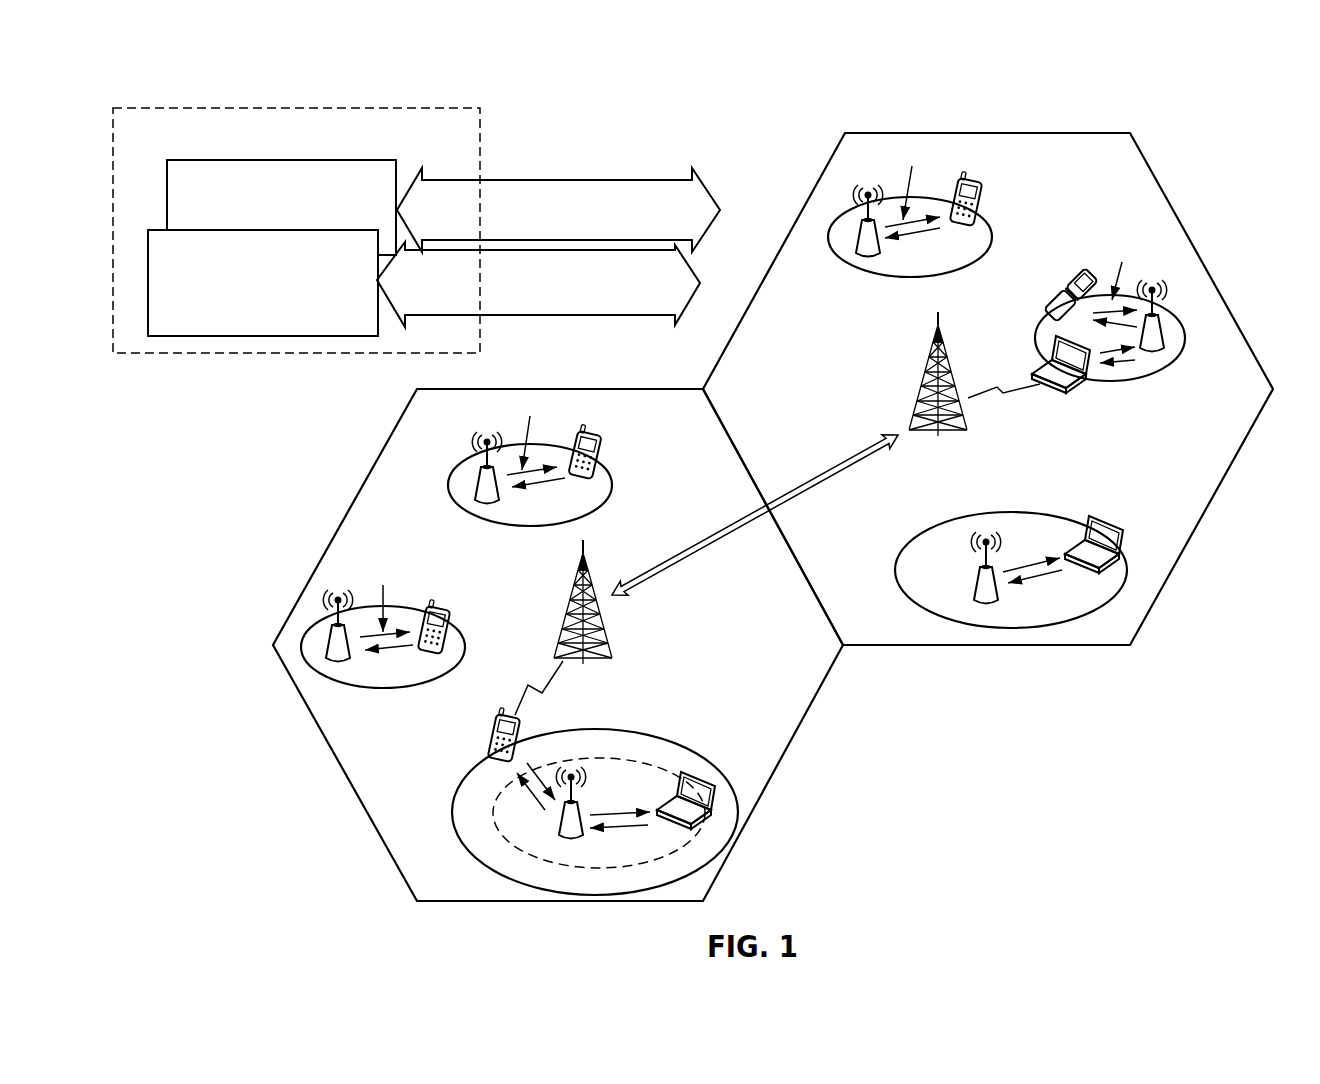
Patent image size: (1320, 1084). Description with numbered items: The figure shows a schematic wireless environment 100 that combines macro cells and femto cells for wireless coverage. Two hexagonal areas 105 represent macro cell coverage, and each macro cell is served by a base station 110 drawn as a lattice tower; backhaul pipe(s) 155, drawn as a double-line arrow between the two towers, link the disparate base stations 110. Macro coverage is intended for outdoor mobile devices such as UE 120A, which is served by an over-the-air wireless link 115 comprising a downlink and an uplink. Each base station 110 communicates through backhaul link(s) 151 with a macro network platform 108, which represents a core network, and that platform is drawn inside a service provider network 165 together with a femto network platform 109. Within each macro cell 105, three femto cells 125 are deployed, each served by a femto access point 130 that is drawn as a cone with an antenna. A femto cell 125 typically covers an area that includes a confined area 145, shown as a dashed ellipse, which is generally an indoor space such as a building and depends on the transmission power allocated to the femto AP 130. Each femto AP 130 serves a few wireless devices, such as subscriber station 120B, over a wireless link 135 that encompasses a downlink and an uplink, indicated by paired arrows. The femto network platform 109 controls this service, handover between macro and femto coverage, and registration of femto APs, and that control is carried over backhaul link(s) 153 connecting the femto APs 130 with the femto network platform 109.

The wireless environment 100 is at (1231, 124).
The macro cell coverage area 105 is at (360, 488).
The macro network platform 108 is at (167, 192).
The femto network platform 109 is at (244, 324).
The base station 110 is at (574, 576).
The wireless link 115 is at (537, 676).
The UE 120A is at (492, 720).
The subscriber station 120B is at (590, 435).
The femto cell 125 is at (467, 518).
The femto access point 130 is at (479, 464).
The wireless link 135 is at (530, 416).
The confined area 145 is at (610, 759).
The backhaul link(s) 151 is at (655, 178).
The backhaul link(s) 153 is at (628, 317).
The backhaul pipe(s) 155 is at (824, 474).
The service provider network 165 is at (298, 108).